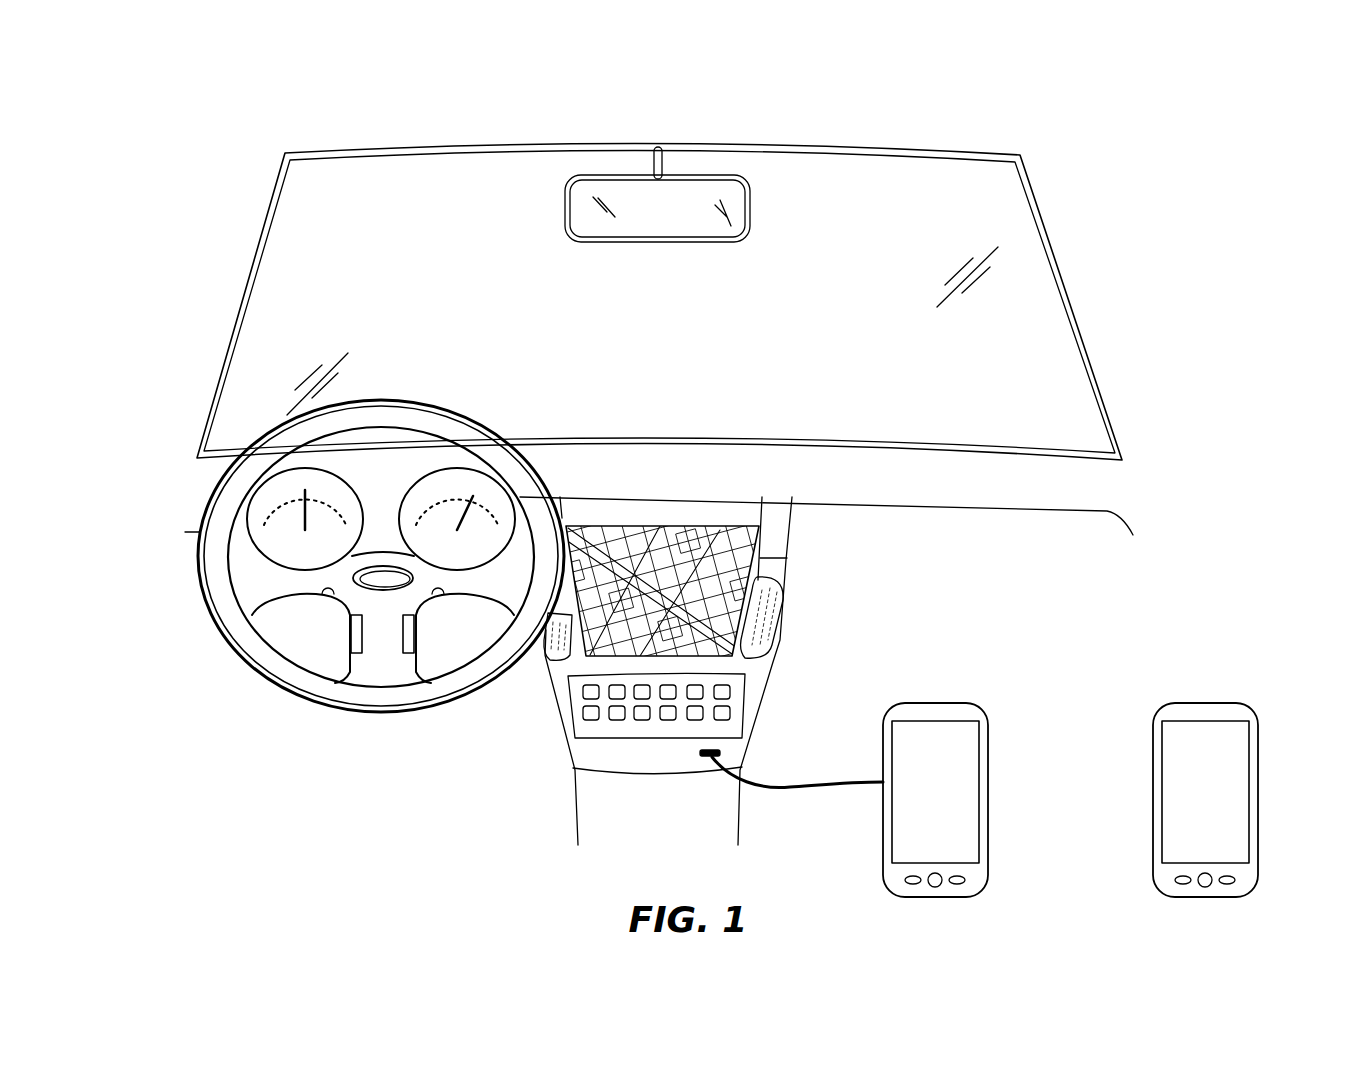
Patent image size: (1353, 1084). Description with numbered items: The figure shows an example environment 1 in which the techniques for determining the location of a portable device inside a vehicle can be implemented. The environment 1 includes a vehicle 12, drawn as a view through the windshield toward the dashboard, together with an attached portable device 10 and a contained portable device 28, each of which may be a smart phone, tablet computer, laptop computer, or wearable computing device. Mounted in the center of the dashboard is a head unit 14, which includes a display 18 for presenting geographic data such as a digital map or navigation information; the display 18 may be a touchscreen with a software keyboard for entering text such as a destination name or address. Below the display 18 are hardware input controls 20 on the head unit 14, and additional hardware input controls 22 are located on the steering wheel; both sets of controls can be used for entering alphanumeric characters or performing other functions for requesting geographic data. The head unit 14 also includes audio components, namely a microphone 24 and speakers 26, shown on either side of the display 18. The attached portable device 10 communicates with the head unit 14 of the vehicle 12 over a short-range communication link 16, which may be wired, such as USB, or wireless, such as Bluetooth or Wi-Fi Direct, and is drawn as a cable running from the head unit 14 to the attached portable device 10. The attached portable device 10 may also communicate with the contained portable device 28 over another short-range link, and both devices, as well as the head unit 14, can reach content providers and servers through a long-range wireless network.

The environment 1 is at (386, 96).
The attached portable device 10 is at (940, 703).
The vehicle 12 is at (186, 424).
The head unit 14 is at (706, 483).
The short-range communication link 16 is at (797, 772).
The display 18 is at (745, 547).
The hardware input controls 20 is at (580, 703).
The hardware input controls 22 is at (346, 642).
The microphone 24 is at (552, 648).
The speakers 26 is at (770, 617).
The contained portable device 28 is at (1212, 703).